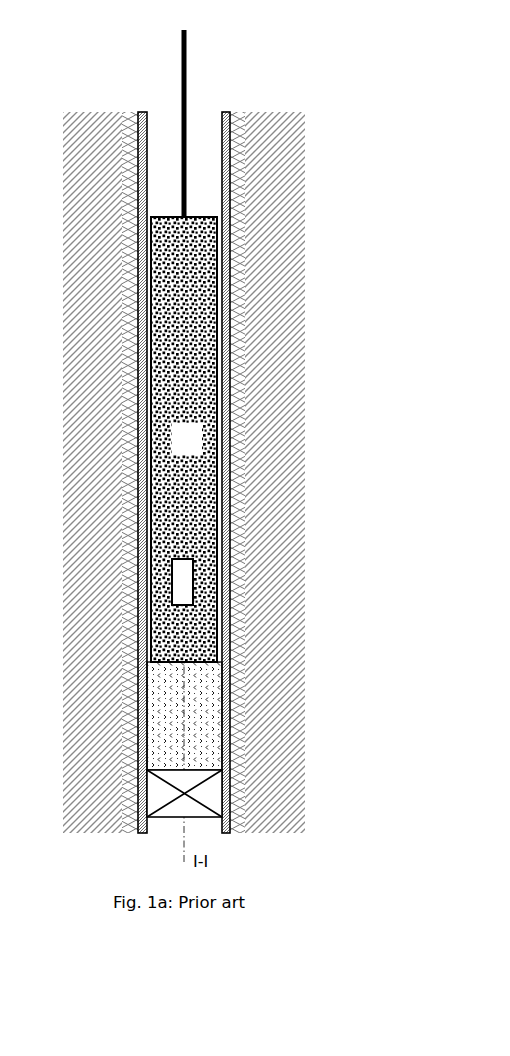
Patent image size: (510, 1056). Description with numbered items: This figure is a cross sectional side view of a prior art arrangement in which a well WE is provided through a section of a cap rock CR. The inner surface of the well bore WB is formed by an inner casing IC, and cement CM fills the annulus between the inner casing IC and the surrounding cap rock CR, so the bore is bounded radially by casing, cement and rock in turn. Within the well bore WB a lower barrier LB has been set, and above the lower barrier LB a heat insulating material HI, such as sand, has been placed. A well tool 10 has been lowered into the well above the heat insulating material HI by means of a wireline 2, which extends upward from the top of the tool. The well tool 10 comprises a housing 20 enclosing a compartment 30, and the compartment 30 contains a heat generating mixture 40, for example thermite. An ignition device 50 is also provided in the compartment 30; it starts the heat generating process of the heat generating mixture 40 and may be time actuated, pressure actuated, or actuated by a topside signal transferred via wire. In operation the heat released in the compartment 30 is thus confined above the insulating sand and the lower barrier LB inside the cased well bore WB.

The wireline 2 is at (188, 63).
The well tool 10 is at (87, 210).
The housing 20 is at (121, 439).
The compartment 30 is at (198, 452).
The heat generating mixture 40 is at (177, 488).
The ignition device 50 is at (172, 595).
The well bore WB is at (197, 197).
The inner casing IC is at (223, 233).
The cement CM is at (238, 285).
The cap rock CR is at (273, 330).
The well WE is at (333, 450).
The heat insulating material HI is at (205, 700).
The lower barrier LB is at (212, 794).